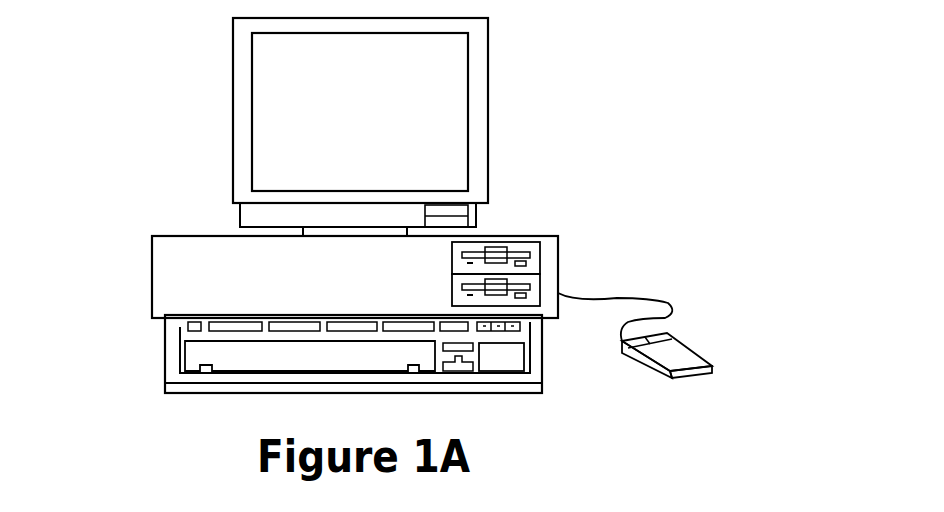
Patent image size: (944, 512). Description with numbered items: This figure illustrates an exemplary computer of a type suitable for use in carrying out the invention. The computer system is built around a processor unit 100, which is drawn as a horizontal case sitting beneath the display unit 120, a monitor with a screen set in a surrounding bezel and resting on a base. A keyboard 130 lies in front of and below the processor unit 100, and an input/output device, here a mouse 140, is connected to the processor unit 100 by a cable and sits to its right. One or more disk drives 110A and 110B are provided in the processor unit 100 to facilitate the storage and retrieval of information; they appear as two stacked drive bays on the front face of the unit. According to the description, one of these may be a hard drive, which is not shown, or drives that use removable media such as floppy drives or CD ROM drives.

The processor unit 100 is at (306, 277).
The disk drive 110A is at (441, 256).
The disk drive 110B is at (440, 290).
The display unit 120 is at (407, 127).
The keyboard 130 is at (307, 354).
The mouse 140 is at (674, 335).